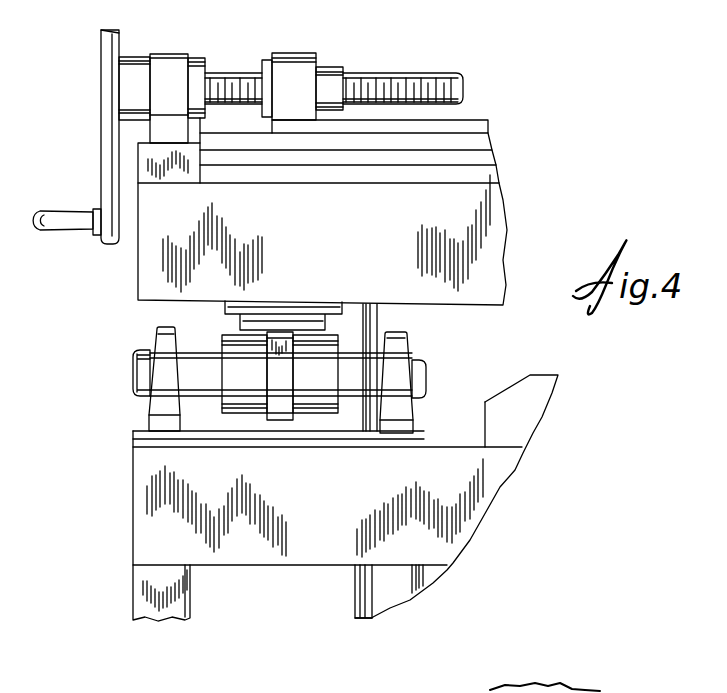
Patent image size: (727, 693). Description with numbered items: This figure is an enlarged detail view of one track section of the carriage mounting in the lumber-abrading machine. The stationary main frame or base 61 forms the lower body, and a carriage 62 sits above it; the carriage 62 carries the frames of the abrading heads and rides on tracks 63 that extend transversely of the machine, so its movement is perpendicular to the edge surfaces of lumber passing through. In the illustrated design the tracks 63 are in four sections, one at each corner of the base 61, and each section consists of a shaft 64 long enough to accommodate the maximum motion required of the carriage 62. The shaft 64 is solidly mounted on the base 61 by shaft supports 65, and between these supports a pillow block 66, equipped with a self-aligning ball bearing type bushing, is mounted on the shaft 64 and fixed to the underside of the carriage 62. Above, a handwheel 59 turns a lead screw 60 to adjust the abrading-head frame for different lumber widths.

The handwheel 59 is at (108, 151).
The lead screw 60 is at (437, 86).
The main frame or base 61 is at (252, 548).
The carriage 62 is at (392, 251).
The tracks 63 is at (127, 395).
The shaft 64 is at (360, 387).
The shaft supports 65 is at (160, 334).
The pillow block 66 is at (280, 337).